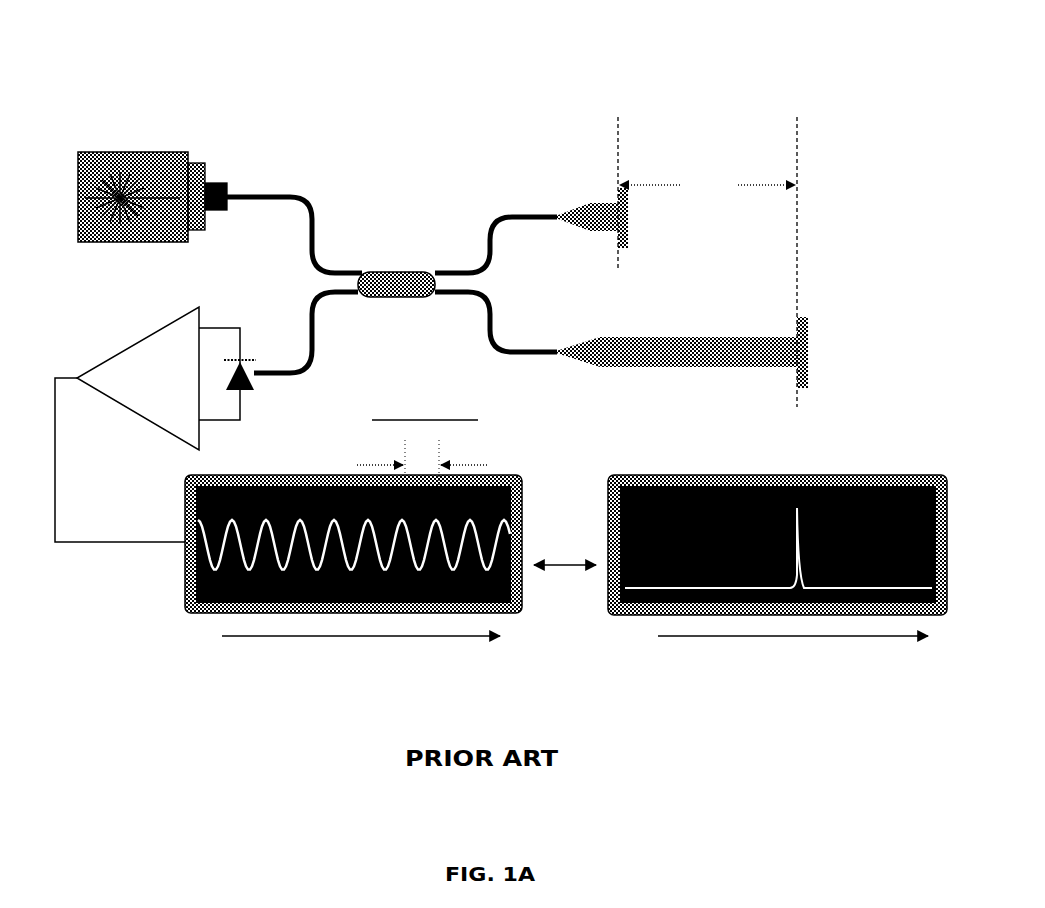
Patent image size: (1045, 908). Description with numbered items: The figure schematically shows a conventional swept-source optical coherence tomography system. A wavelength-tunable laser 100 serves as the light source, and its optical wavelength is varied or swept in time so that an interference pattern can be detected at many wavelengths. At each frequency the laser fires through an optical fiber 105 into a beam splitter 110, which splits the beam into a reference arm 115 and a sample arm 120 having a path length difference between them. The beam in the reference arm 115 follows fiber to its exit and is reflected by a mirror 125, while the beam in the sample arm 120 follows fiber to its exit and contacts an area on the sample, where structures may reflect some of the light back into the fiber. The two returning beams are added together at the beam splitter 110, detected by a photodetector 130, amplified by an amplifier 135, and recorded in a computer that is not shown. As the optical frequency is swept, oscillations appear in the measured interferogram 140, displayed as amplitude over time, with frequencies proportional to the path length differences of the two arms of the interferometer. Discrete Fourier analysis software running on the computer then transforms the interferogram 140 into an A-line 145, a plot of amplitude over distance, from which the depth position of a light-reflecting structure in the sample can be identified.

The wavelength-tunable laser 100 is at (120, 88).
The optical fiber 105 is at (320, 208).
The beam splitter 110 is at (393, 299).
The reference arm 115 is at (724, 301).
The sample arm 120 is at (717, 419).
The mirror 125 is at (632, 216).
The photodetector 130 is at (262, 385).
The amplifier 135 is at (130, 412).
The interferogram 140 is at (512, 475).
The A-line 145 is at (740, 475).